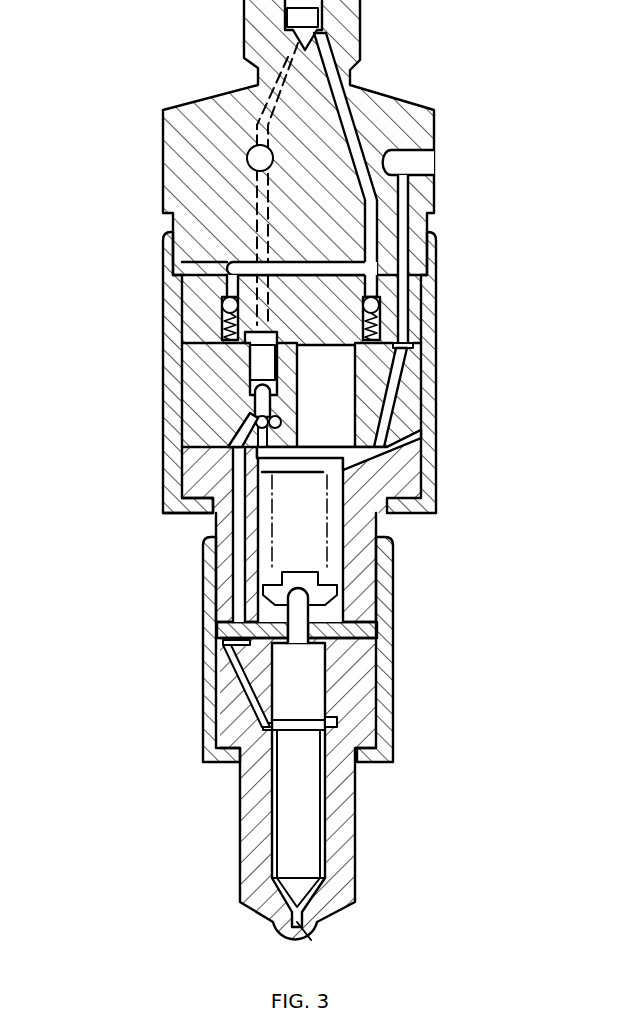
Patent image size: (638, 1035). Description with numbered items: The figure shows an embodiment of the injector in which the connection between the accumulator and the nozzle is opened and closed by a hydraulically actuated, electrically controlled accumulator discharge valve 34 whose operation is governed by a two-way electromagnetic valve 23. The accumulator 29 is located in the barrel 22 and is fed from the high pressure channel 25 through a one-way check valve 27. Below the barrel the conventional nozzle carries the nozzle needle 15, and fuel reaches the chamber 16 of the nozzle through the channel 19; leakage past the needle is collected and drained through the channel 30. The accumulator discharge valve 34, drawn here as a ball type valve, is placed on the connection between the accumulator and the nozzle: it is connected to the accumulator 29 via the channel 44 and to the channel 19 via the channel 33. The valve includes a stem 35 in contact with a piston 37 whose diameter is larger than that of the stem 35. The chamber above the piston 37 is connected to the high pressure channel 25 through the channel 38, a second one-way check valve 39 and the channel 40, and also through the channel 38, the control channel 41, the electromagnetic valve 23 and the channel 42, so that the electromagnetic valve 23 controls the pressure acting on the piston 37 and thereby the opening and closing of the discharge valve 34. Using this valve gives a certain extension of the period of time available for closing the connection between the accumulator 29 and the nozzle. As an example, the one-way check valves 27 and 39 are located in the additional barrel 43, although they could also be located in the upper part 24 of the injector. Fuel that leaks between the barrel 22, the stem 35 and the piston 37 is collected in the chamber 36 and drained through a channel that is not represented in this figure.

The nozzle needle 15 is at (293, 820).
The chamber of the nozzle 16 is at (268, 725).
The channel 19 is at (237, 595).
The barrel 22 is at (415, 365).
The 2-way electromagnetic valve 23 is at (247, 162).
The upper part 24 is at (193, 133).
The high pressure channel 25 is at (338, 122).
The one-way check valve 27 is at (385, 304).
The accumulator 29 is at (332, 392).
The channel 30 is at (382, 427).
The channel 33 is at (180, 493).
The accumulator discharge valve 34 is at (235, 432).
The stem 35 is at (258, 423).
The chamber 36 is at (262, 402).
The piston 37 is at (262, 363).
The channel 38 is at (265, 352).
The one-way check valve 39 is at (222, 308).
The channel 40 is at (228, 268).
The control channel 41 is at (258, 223).
The channel 42 is at (267, 118).
The additional barrel 43 is at (415, 292).
The channel 44 is at (320, 453).